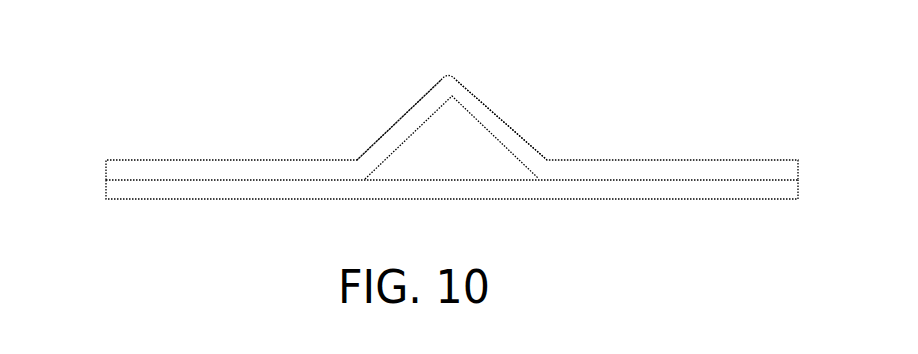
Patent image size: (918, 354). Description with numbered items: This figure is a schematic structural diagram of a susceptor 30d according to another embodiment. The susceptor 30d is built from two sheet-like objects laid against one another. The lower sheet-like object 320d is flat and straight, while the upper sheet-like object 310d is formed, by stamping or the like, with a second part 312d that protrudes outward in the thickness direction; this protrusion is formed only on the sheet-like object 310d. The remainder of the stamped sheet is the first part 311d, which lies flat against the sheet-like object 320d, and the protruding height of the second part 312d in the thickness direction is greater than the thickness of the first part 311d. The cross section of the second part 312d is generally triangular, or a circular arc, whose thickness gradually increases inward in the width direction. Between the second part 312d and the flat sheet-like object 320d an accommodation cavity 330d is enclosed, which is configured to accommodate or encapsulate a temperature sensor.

The susceptor 30d is at (275, 63).
The second sheet-like object 310d is at (141, 160).
The first part 311d is at (339, 169).
The second part 312d is at (480, 108).
The second sheet-like object 320d is at (138, 205).
The accommodation cavity 330d is at (485, 150).